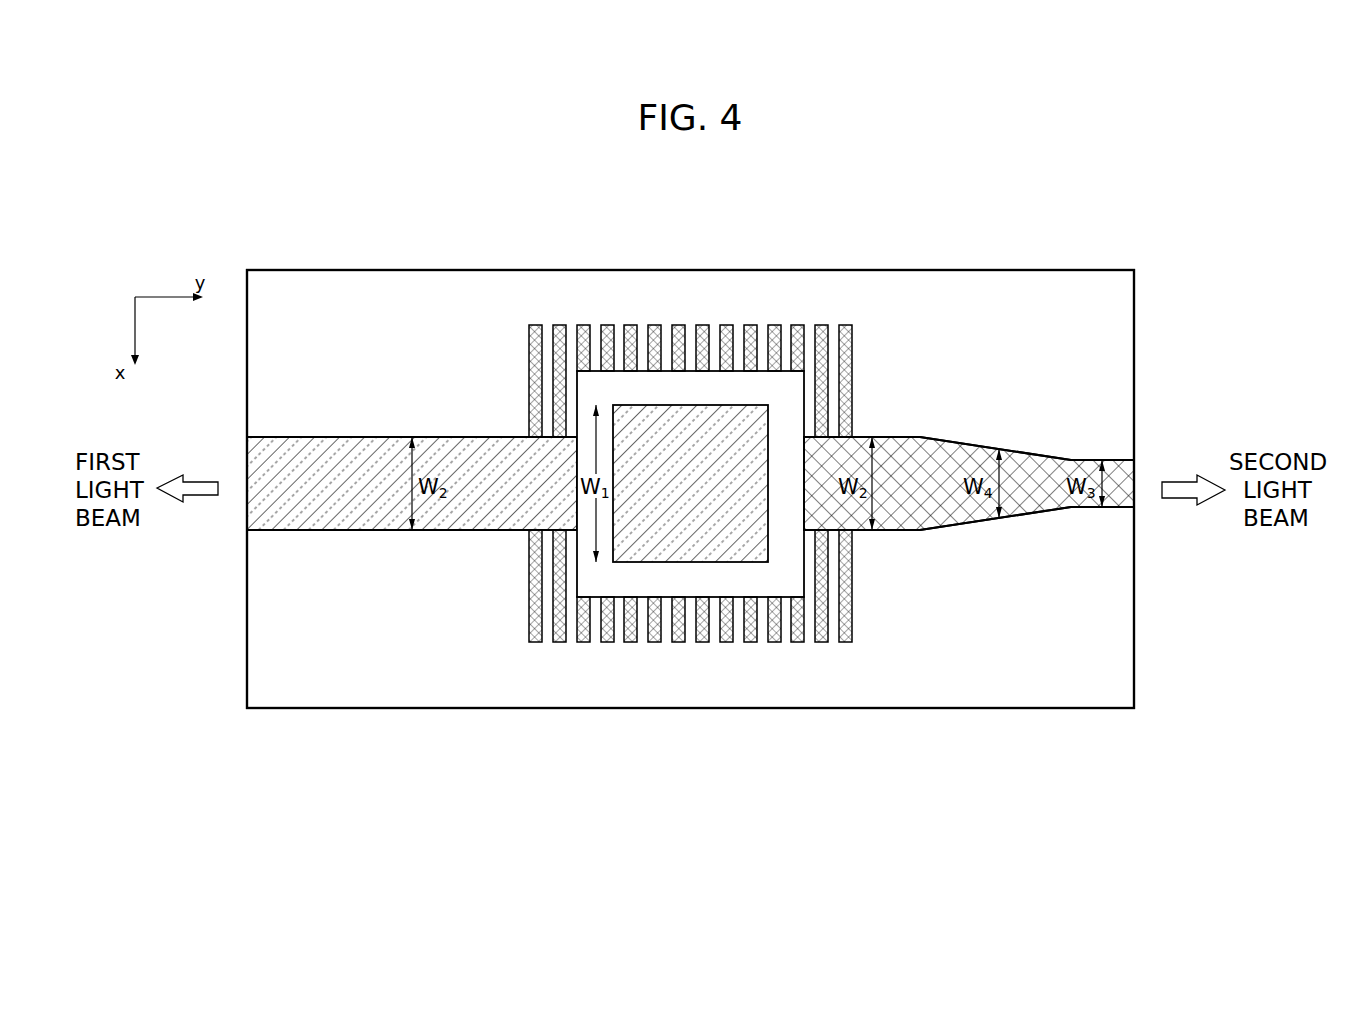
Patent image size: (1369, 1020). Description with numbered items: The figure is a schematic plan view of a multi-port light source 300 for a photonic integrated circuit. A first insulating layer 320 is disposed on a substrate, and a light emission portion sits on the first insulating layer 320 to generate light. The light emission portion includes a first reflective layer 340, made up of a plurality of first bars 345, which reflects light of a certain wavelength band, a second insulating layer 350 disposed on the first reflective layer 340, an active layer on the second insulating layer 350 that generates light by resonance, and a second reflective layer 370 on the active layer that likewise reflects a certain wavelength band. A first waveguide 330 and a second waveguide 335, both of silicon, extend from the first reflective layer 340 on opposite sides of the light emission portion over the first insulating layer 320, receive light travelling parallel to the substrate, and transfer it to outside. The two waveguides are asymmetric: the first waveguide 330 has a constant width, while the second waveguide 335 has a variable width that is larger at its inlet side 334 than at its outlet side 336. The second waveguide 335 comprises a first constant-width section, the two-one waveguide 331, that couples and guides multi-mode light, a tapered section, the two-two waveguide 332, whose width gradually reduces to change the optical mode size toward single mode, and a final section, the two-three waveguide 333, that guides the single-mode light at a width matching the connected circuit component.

The multi-port light source 300 is at (1064, 240).
The first insulating layer 320 is at (1135, 352).
The first waveguide 330 is at (246, 460).
The 2-1 waveguide 331 is at (888, 531).
The 2-2 waveguide 332 is at (1005, 520).
The 2-3 waveguide 333 is at (1108, 508).
The inlet side 334 is at (844, 442).
The second waveguide 335 is at (873, 613).
The outlet side 336 is at (1135, 482).
The first reflective layer 340 is at (845, 652).
The first bars 345 is at (583, 325).
The second insulating layer 350 is at (761, 371).
The second reflective layer 370 is at (693, 405).